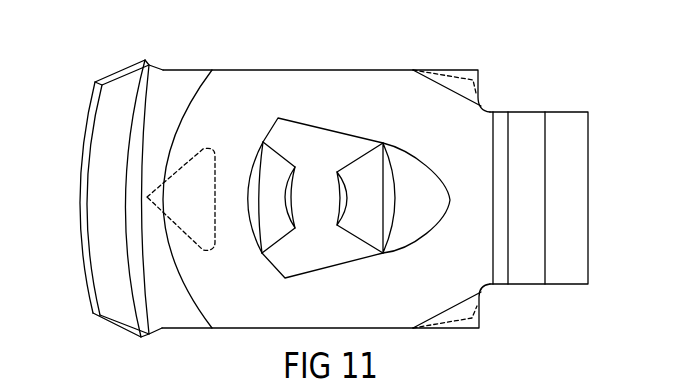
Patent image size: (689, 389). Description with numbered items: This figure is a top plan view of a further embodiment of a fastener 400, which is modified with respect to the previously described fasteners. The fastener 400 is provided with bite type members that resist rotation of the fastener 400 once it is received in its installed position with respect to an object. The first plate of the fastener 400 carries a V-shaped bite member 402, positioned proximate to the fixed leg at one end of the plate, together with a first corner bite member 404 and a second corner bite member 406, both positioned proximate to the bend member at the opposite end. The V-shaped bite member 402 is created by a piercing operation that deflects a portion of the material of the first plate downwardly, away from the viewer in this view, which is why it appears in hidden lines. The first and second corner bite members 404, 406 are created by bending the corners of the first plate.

The fastener 400 is at (495, 55).
The V-shaped bite member 402 is at (147, 197).
The first corner bite member 404 is at (476, 80).
The second corner bite member 406 is at (478, 308).